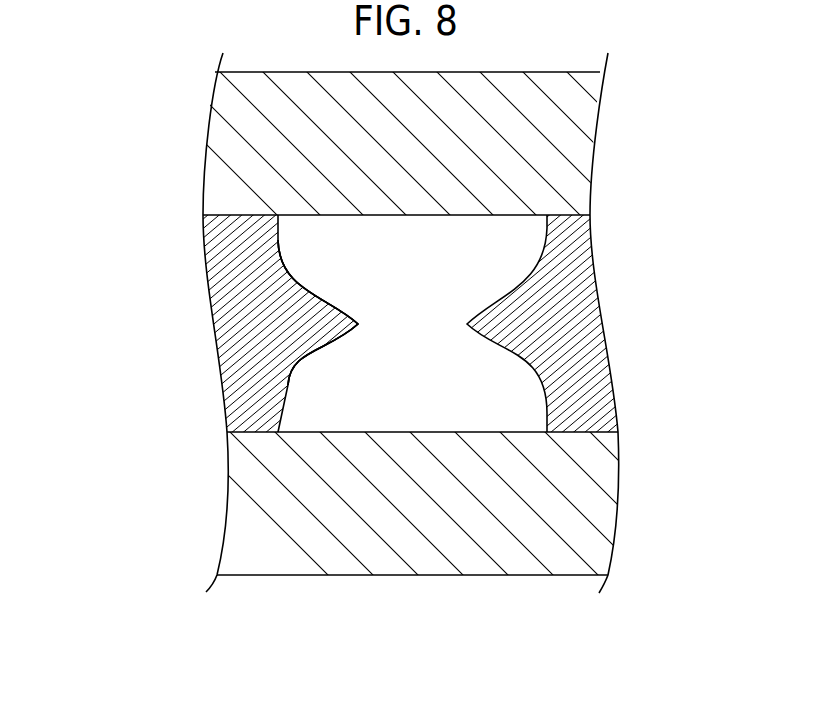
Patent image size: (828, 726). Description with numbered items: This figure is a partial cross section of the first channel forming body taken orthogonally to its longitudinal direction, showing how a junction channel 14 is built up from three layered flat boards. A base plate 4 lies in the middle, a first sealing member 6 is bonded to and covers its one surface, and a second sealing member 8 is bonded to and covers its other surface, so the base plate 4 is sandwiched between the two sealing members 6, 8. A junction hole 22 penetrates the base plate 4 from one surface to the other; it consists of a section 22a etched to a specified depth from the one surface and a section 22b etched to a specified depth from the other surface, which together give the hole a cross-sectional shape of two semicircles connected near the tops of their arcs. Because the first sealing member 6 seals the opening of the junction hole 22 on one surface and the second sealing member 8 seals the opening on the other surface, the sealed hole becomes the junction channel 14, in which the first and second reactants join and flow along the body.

The first sealing member 6 is at (575, 150).
The base plate 4 is at (567, 295).
The second sealing member 8 is at (595, 510).
The junction channel 14 is at (413, 398).
The junction hole 22 is at (105, 258).
The section of junction hole 22a is at (310, 300).
The section of junction hole 22b is at (316, 351).